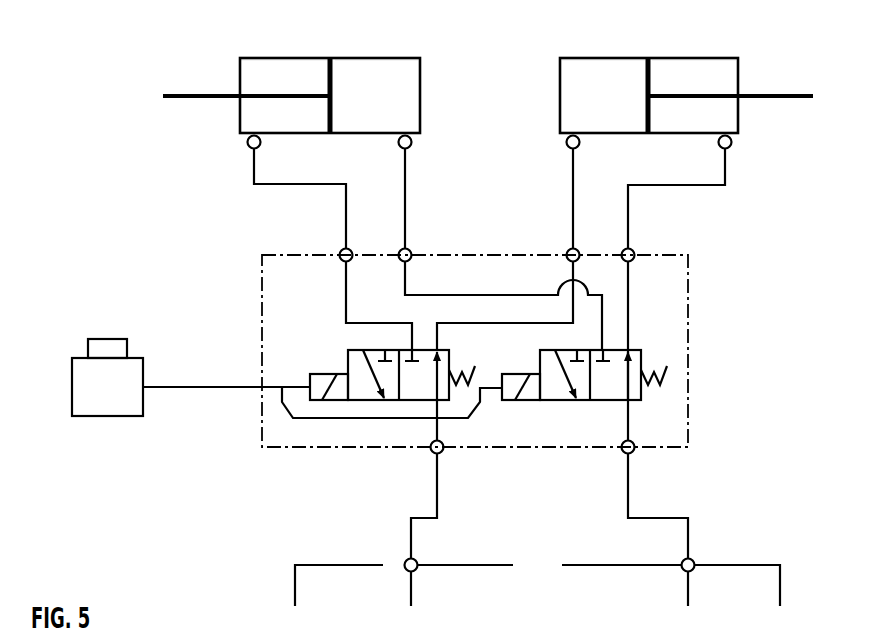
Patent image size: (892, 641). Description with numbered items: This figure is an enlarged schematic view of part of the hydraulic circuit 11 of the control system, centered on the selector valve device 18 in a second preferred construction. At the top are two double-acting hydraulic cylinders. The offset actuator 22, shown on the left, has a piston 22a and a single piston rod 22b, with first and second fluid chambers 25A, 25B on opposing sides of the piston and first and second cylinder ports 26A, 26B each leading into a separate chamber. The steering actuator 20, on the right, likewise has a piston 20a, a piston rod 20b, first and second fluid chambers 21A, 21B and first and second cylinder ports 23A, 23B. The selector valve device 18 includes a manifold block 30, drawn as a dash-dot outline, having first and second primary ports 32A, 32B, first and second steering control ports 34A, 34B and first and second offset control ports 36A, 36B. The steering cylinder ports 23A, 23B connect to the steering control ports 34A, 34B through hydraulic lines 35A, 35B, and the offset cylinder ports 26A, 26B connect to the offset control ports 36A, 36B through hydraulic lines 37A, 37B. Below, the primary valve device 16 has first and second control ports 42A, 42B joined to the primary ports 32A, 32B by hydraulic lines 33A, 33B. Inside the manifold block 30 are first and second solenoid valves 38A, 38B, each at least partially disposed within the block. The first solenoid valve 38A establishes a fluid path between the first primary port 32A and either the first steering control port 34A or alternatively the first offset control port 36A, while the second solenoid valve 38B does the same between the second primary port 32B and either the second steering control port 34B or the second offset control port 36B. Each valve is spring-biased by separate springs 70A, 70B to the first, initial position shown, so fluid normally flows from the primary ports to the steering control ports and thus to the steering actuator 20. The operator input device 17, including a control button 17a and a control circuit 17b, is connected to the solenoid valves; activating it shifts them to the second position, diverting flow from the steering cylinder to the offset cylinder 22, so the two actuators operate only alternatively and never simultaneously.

The hydraulic circuit 11 is at (262, 570).
The primary valve device 16 is at (764, 562).
The operator input device 17 is at (116, 444).
The control button 17a is at (108, 338).
The control circuit 17b is at (207, 388).
The selector valve device 18 is at (478, 351).
The steering actuator 20 is at (742, 57).
The piston 20a is at (649, 90).
The piston rod 20b is at (758, 100).
The first fluid chamber 21A is at (680, 76).
The second fluid chamber 21B is at (610, 78).
The offset actuator 22 is at (236, 58).
The piston 22a is at (335, 90).
The piston rod 22b is at (185, 100).
The first cylinder port 23A is at (731, 148).
The second cylinder port 23B is at (566, 146).
The first fluid chamber 25A is at (404, 82).
The second fluid chamber 25B is at (303, 77).
The first cylinder port 26A is at (411, 148).
The second cylinder port 26B is at (247, 146).
The manifold block 30 is at (666, 300).
The first primary port 32A is at (634, 453).
The second primary port 32B is at (431, 454).
The hydraulic line 33A is at (637, 518).
The hydraulic line 33B is at (445, 498).
The first steering control port 34A is at (634, 252).
The second steering control port 34B is at (567, 251).
The hydraulic line 35A is at (712, 188).
The hydraulic line 35B is at (575, 190).
The first offset control port 36A is at (412, 254).
The second offset control port 36B is at (341, 251).
The hydraulic line 37A is at (402, 176).
The hydraulic line 37B is at (254, 183).
The first solenoid valve 38A is at (643, 350).
The second solenoid valve 38B is at (348, 362).
The first control port 42A is at (694, 560).
The second control port 42B is at (405, 560).
The spring 70A is at (668, 372).
The spring 70B is at (475, 366).